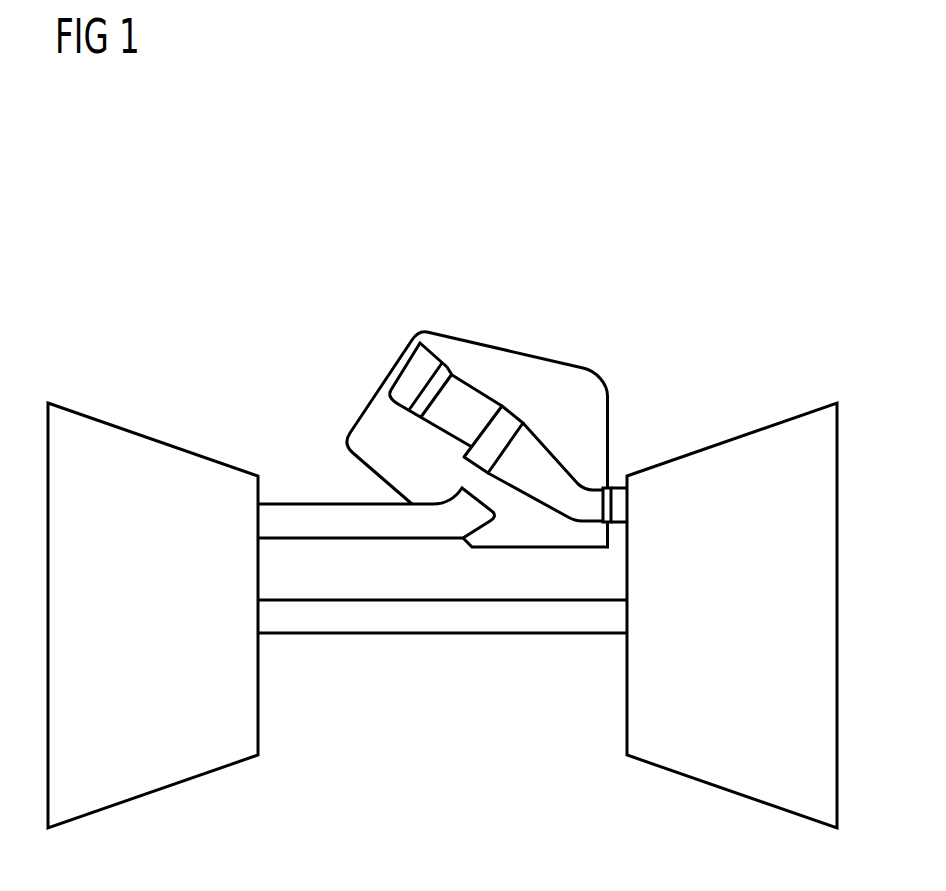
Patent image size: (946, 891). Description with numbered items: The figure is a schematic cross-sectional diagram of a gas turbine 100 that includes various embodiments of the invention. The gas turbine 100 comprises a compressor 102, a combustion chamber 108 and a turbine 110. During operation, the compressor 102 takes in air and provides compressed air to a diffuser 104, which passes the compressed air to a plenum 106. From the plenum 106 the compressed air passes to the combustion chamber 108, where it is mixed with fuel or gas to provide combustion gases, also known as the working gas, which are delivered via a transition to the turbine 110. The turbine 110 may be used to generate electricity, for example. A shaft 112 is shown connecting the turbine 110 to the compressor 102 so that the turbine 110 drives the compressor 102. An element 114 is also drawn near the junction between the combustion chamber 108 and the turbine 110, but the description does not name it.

The gas turbine 100 is at (277, 197).
The compressor 102 is at (171, 621).
The diffuser 104 is at (310, 504).
The plenum 106 is at (583, 390).
The combustion chamber 108 is at (468, 380).
The turbine 110 is at (764, 621).
The shaft 112 is at (443, 635).
The connector 114 is at (573, 462).